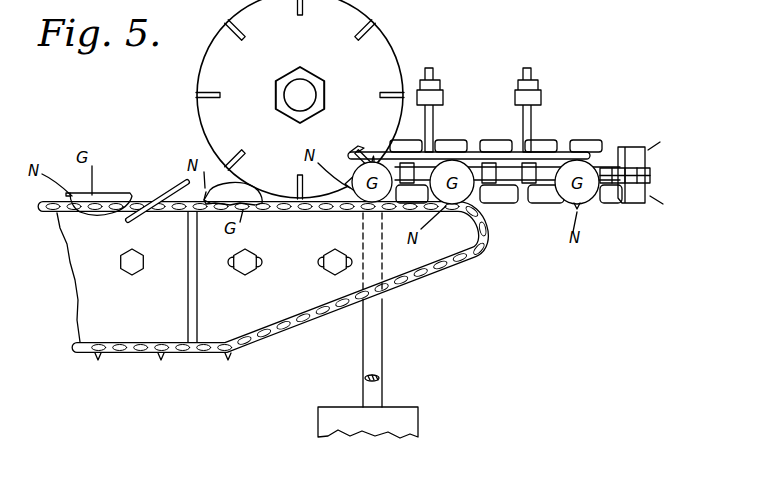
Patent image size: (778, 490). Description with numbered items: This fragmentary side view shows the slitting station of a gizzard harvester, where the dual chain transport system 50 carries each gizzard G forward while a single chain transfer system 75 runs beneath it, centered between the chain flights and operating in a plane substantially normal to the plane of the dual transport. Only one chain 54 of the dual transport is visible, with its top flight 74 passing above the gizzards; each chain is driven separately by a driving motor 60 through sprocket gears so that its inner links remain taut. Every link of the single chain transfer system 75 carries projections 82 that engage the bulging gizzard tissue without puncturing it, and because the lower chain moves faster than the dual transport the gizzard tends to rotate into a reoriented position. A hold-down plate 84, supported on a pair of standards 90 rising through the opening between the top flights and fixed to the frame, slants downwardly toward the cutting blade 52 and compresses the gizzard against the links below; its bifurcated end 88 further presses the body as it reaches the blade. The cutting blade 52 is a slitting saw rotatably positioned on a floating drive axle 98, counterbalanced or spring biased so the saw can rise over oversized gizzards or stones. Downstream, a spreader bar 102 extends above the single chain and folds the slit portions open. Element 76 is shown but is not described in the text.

The dual chain transport system 50 is at (626, 91).
The cutting blade 52 is at (213, 126).
The chain 54 is at (650, 172).
The driving motor 60 is at (407, 415).
The top flight 74 is at (601, 147).
The single chain transfer system 75 is at (283, 213).
The guide rod 76 is at (655, 195).
The projections 82 is at (420, 282).
The hold-down plate 84 is at (543, 152).
The bifurcated end 88 is at (374, 162).
The standards 90 is at (518, 112).
The drive axle 98 is at (306, 85).
The spreader bar 102 is at (160, 172).